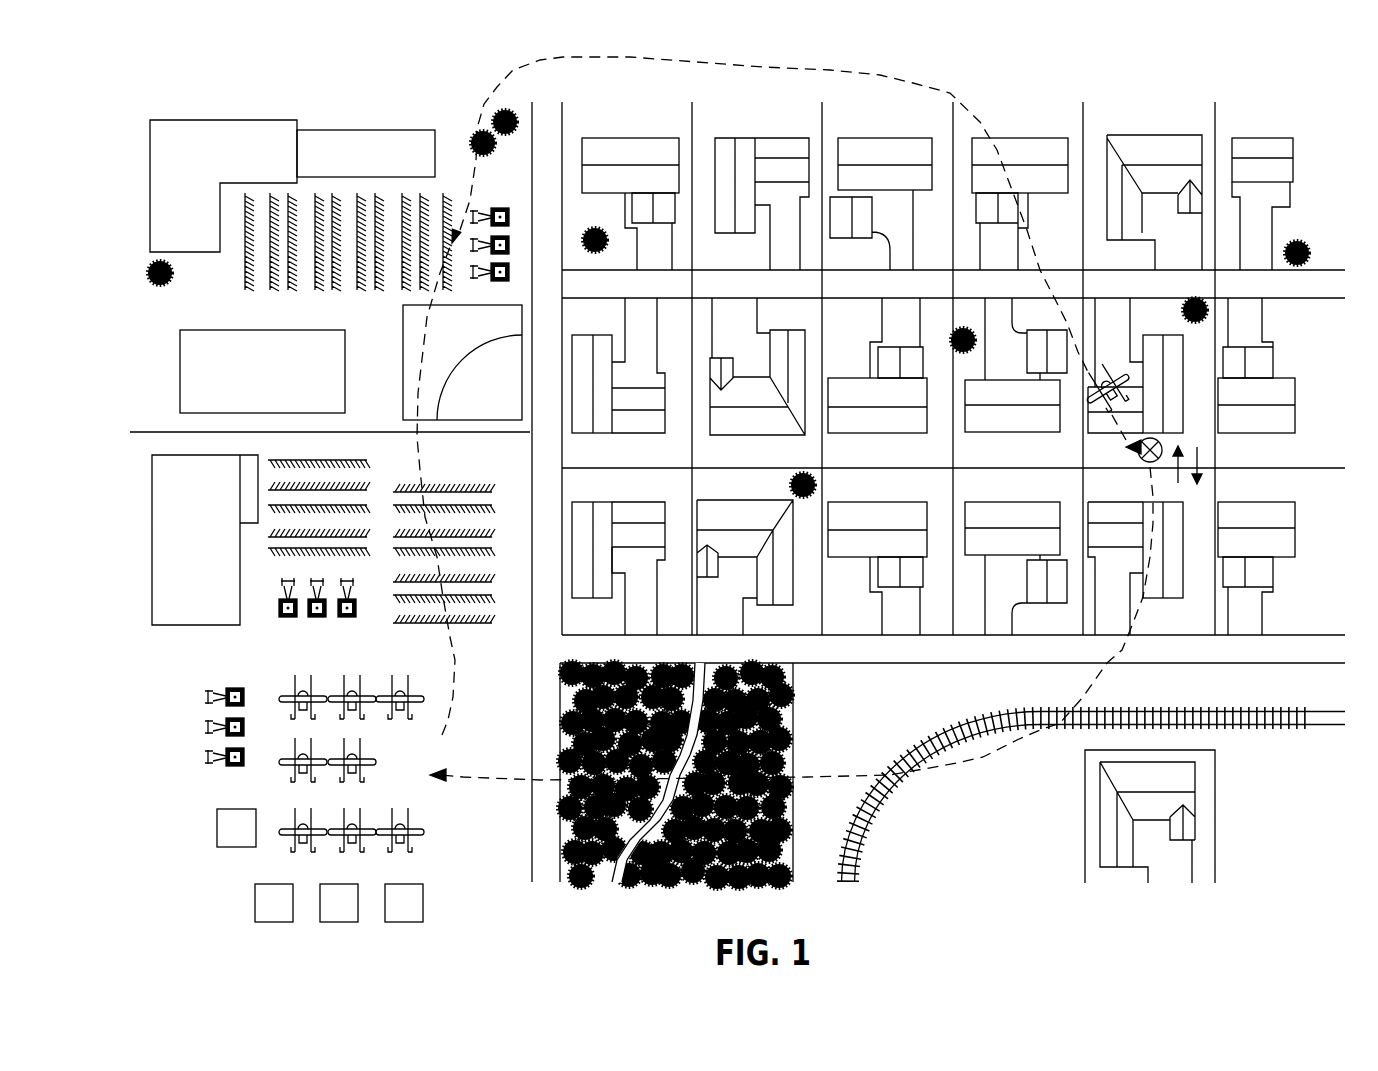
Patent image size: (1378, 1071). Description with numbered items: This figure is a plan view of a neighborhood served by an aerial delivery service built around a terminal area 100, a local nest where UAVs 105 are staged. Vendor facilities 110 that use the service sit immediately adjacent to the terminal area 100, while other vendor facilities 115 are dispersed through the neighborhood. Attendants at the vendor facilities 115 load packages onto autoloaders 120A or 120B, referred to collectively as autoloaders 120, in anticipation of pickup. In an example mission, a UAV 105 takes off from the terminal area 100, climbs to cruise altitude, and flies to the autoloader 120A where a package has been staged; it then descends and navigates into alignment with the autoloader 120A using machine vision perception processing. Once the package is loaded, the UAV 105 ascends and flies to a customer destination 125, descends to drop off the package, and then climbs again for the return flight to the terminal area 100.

The terminal area 100 is at (197, 902).
The UAV 105 is at (415, 699).
The vendor facility 110 is at (217, 826).
The vendor facility 115 is at (292, 372).
The autoloader 120 is at (173, 727).
The autoloader 120A is at (462, 183).
The autoloader 120B is at (295, 634).
The customer destination 125 is at (1140, 460).